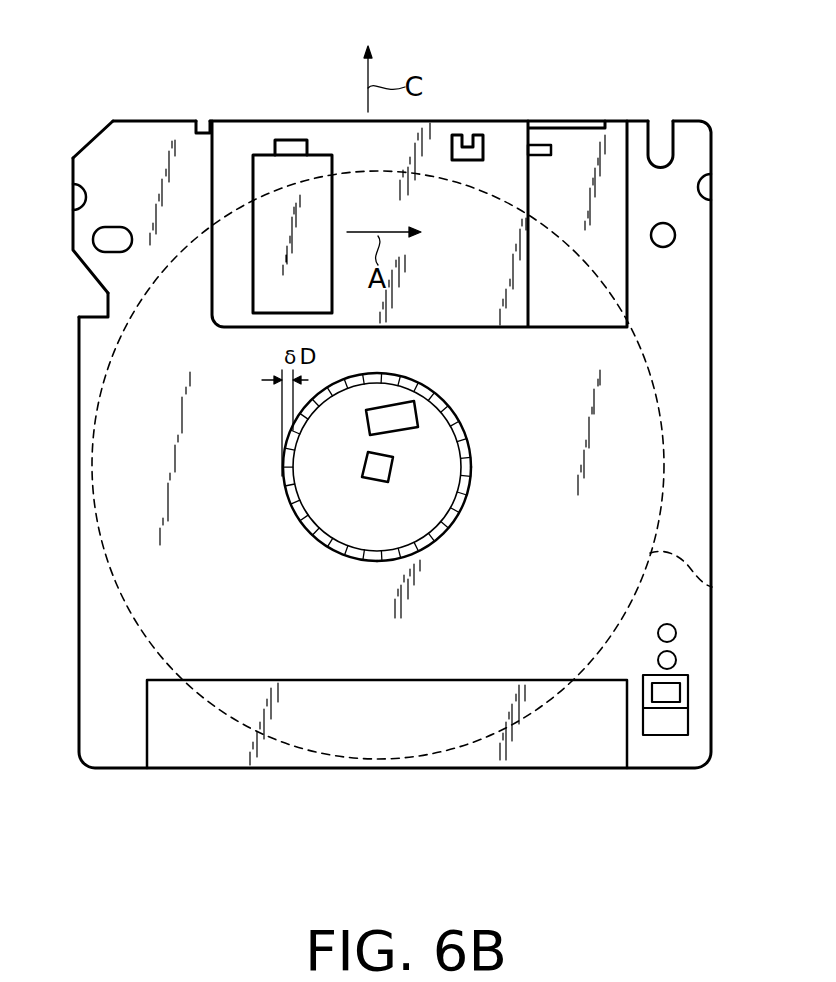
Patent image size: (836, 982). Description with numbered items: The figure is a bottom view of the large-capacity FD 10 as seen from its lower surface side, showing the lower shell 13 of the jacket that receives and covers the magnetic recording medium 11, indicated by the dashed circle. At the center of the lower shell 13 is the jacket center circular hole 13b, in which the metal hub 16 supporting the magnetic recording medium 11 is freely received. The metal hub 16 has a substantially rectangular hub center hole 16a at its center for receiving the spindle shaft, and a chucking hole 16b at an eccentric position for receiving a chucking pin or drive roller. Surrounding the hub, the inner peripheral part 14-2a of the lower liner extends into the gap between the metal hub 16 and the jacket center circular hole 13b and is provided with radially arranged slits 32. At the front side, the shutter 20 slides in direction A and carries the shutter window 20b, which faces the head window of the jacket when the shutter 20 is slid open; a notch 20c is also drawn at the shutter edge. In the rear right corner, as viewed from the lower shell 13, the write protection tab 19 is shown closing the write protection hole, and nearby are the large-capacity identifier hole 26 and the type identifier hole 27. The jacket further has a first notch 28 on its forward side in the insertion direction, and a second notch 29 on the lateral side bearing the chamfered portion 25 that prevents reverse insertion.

The large-capacity FD 10 is at (716, 403).
The magnetic recording medium 11 is at (711, 588).
The lower shell 13 is at (690, 293).
The jacket center circular hole 13b is at (460, 507).
The inner peripheral part 14-2a is at (443, 540).
The metal hub 16 is at (447, 447).
The hub center hole 16a is at (375, 465).
The chucking hole 16b is at (395, 415).
The write protection tab 19 is at (677, 693).
The shutter 20 is at (262, 130).
The shutter window 20b is at (290, 316).
The shutter notch 20c is at (208, 128).
The chamfered portion 25 is at (95, 139).
The large-capacity identifier hole 26 is at (677, 660).
The type identifier hole 27 is at (677, 633).
The first notch 28 is at (660, 137).
The second notch 29 is at (88, 307).
The slits 32 is at (283, 497).